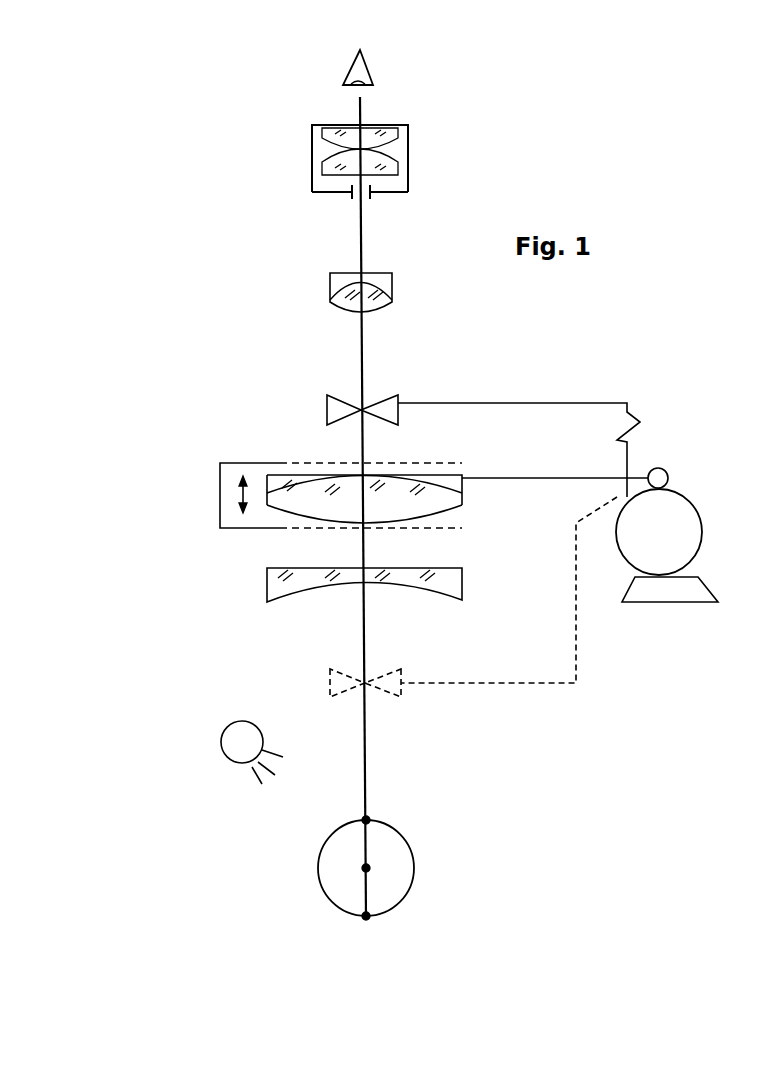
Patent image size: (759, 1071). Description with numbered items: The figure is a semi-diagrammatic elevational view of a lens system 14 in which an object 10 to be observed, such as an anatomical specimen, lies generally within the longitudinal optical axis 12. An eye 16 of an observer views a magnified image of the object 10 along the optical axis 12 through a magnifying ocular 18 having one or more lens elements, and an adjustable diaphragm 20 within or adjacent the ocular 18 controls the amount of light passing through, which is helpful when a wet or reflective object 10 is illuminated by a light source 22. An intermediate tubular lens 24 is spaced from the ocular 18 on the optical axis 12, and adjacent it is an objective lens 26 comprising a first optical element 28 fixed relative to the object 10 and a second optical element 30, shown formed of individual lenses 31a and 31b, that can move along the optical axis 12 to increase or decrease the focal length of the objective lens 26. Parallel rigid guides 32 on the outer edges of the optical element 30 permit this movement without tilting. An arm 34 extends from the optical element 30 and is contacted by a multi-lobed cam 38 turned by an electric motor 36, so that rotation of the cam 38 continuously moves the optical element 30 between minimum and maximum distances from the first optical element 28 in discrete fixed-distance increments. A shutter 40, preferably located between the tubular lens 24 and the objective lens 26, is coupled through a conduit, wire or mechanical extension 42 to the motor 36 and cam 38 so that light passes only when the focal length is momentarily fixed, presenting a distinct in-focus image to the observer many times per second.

The object 10 is at (396, 832).
The longitudinal optical axis 12 is at (363, 112).
The lens system 14 is at (241, 400).
The eye 16 is at (372, 72).
The ocular 18 is at (409, 147).
The adjustable diaphragm 20 is at (396, 193).
The light source 22 is at (232, 722).
The intermediate tubular lens 24 is at (392, 292).
The objective lens 26 is at (176, 457).
The first optical element 28 is at (462, 582).
The second optical element 30 is at (464, 473).
The lens 31a is at (464, 487).
The lens 31b is at (458, 502).
The guides 32 is at (322, 495).
The arm 34 is at (662, 469).
The electric motor 36 is at (667, 603).
The multi-lobed cam 38 is at (698, 508).
The shutter 40 is at (393, 397).
The mechanical extension 42 is at (630, 400).